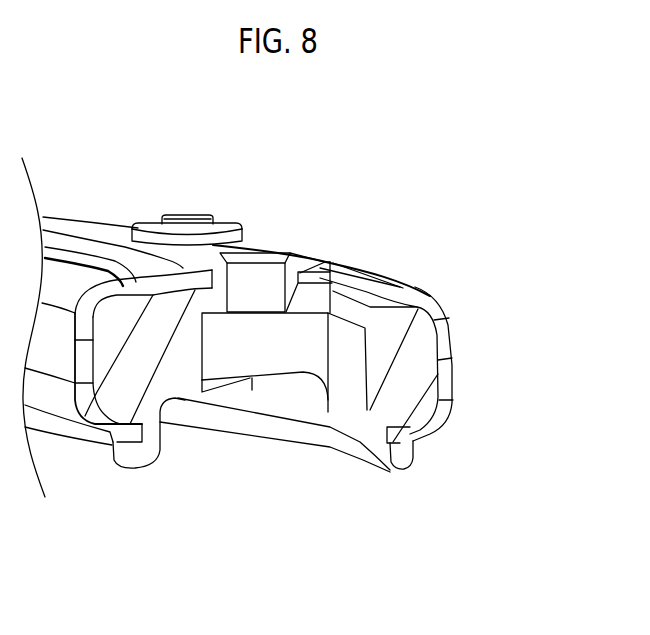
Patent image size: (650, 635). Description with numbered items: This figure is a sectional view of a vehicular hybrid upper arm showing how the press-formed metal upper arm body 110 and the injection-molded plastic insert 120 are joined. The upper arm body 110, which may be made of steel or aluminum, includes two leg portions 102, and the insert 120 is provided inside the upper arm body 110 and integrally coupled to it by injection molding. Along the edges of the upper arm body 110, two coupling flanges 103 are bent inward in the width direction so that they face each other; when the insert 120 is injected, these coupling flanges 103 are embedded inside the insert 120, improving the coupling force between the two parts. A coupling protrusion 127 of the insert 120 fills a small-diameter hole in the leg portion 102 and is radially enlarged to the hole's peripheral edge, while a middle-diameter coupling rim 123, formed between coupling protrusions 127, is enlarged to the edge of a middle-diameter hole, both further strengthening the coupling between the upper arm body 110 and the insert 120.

The leg portion 102 is at (388, 280).
The coupling flange 103 is at (110, 436).
The upper arm body 110 is at (450, 337).
The insert 120 is at (388, 409).
The middle-diameter coupling rim 123 is at (308, 263).
The coupling protrusion 127 is at (153, 217).